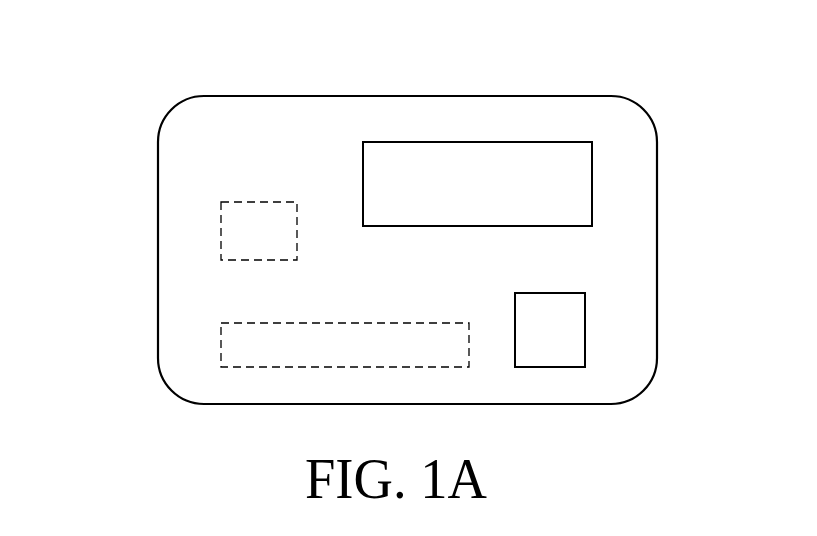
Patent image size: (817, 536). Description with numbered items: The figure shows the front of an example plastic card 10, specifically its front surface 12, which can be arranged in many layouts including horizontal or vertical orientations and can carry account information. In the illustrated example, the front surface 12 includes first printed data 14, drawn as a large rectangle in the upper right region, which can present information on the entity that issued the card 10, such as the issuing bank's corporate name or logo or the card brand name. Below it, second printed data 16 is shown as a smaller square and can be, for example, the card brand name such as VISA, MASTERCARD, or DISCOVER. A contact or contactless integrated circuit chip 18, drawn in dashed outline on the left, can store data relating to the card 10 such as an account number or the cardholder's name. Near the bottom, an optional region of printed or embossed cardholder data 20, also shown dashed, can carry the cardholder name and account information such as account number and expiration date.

The plastic card 10 is at (698, 86).
The front surface 12 is at (593, 95).
The first printed data 14 is at (538, 141).
The second printed data 16 is at (550, 292).
The integrated circuit chip 18 is at (258, 201).
The cardholder data 20 is at (256, 322).